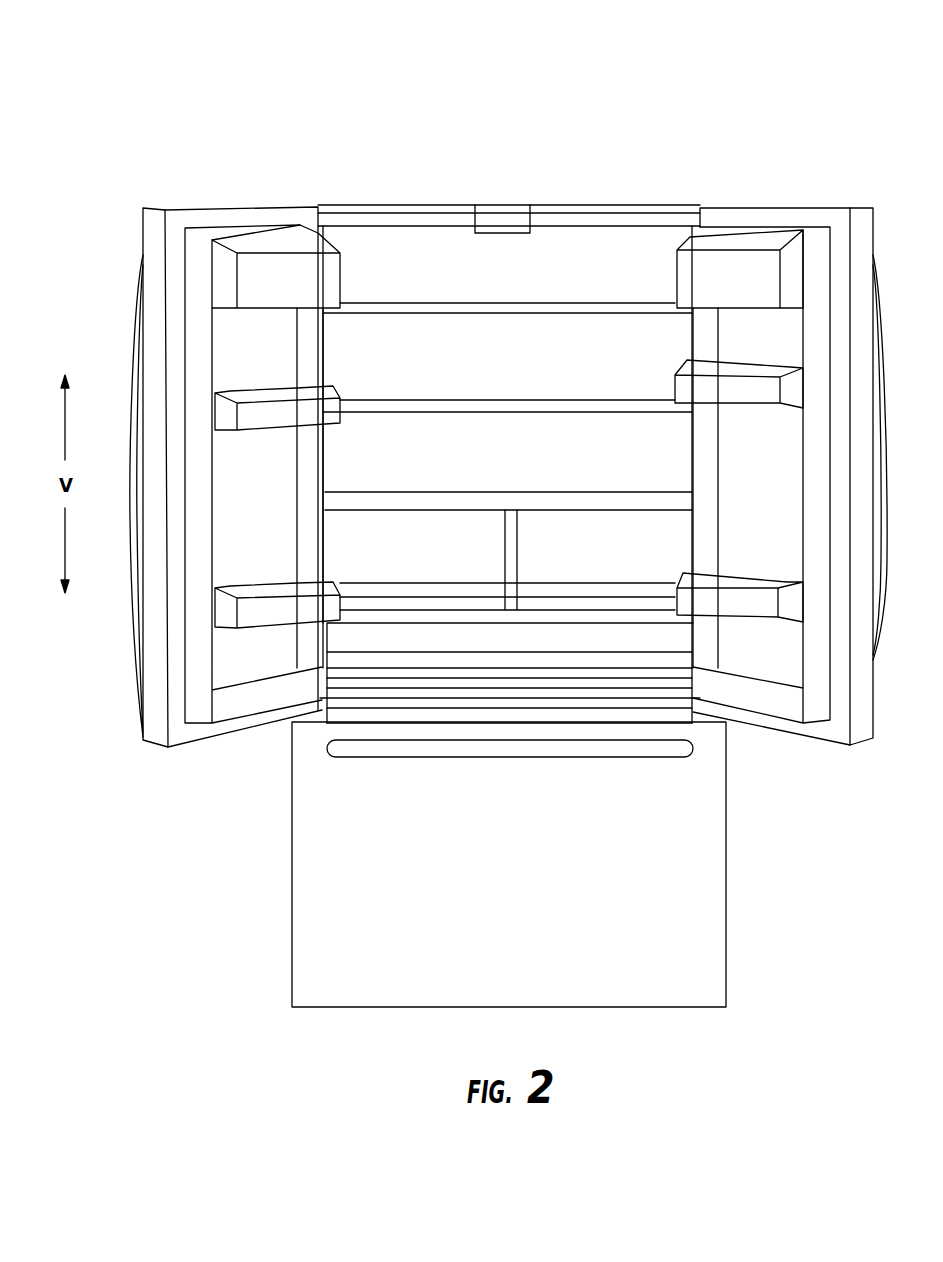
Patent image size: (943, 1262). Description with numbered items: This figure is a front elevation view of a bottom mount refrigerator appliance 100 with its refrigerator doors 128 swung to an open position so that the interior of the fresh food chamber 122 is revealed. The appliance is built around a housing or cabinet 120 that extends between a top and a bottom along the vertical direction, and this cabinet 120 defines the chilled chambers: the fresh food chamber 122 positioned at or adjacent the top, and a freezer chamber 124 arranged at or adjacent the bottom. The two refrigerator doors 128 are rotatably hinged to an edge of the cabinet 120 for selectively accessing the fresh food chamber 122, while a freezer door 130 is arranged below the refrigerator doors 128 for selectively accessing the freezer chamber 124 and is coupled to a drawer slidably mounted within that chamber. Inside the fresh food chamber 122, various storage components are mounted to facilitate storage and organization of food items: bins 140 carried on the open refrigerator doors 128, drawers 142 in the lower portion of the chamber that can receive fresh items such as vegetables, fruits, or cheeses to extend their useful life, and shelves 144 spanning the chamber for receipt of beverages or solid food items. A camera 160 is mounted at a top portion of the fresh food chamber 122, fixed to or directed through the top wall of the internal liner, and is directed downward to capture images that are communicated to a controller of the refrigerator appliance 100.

The refrigerator appliance 100 is at (692, 78).
The cabinet 120 is at (727, 722).
The fresh food chamber 122 is at (606, 245).
The freezer chamber 124 is at (677, 918).
The refrigerator doors 128 is at (237, 218).
The freezer door 130 is at (323, 932).
The bins 140 is at (278, 615).
The drawers 142 is at (538, 603).
The shelves 144 is at (507, 307).
The camera 160 is at (505, 233).